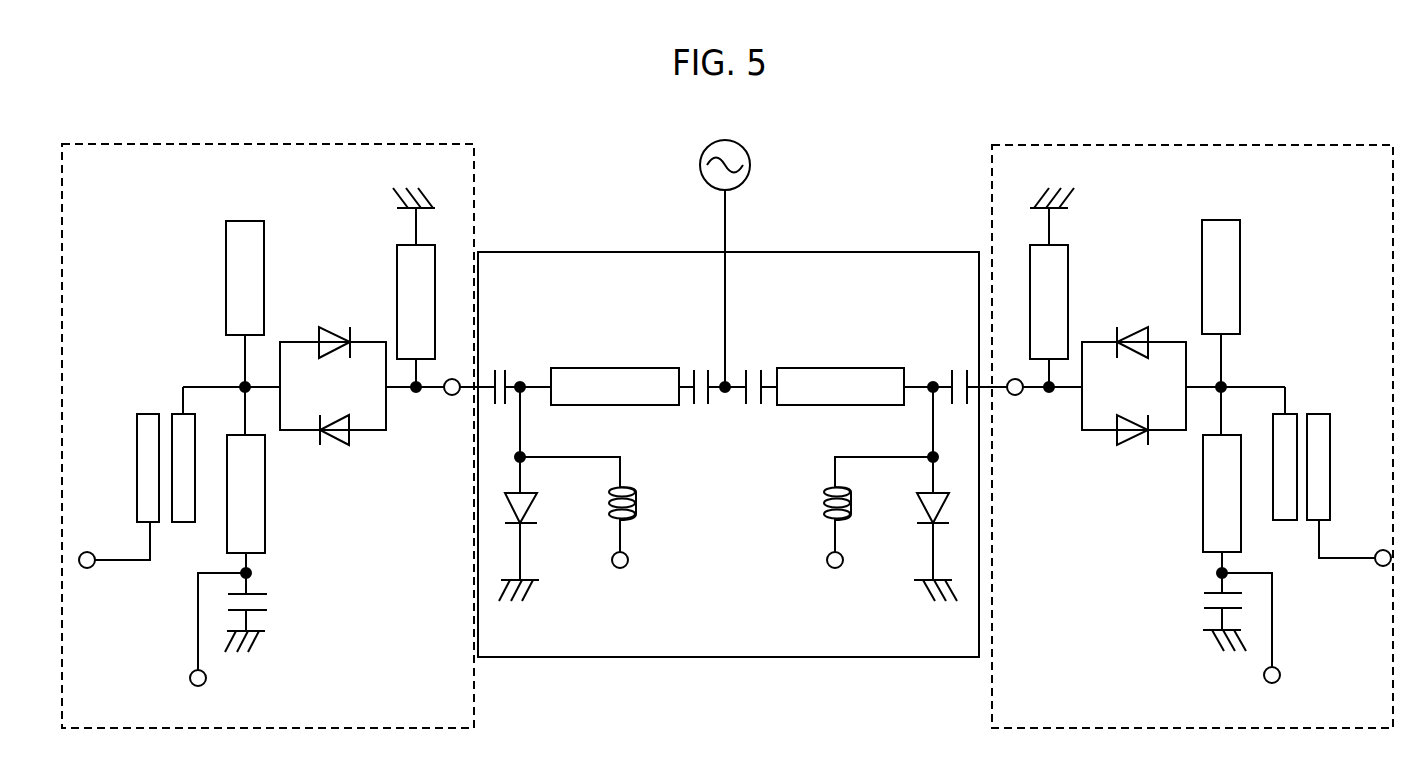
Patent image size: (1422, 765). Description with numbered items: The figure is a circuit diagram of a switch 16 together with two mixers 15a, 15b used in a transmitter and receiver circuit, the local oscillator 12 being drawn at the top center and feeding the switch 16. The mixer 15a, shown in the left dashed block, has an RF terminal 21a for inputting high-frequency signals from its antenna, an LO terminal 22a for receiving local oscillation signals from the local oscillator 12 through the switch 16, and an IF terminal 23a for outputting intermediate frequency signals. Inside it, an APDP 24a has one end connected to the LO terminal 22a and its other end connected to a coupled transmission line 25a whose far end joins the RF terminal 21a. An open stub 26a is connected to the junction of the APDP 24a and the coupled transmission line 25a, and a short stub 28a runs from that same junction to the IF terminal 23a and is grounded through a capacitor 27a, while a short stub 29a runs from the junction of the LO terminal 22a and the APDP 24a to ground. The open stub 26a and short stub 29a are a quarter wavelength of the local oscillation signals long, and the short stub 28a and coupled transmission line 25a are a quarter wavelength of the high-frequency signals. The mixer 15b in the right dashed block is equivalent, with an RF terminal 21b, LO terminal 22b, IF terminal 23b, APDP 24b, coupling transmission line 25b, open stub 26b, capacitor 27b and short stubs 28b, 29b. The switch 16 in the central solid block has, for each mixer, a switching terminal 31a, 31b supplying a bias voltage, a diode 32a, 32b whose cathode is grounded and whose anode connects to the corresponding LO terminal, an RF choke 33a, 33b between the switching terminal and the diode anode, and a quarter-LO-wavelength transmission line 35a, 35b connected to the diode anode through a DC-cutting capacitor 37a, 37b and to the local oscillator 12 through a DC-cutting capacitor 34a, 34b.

The local oscillator 12 is at (700, 170).
The mixer 15a is at (478, 693).
The mixer 15b is at (978, 702).
The switch 16 is at (903, 251).
The RF terminal 21a is at (87, 552).
The RF terminal 21b is at (1383, 550).
The LO terminal 22a is at (452, 395).
The LO terminal 22b is at (1015, 395).
The IF terminal 23a is at (190, 678).
The IF terminal 23b is at (1280, 675).
The APDP 24a is at (346, 458).
The APDP 24b is at (1124, 466).
The coupled transmission line 25a is at (144, 392).
The coupling transmission line 25b is at (1324, 392).
The open stub 26a is at (247, 221).
The open stub 26b is at (1218, 220).
The capacitor 27a is at (270, 602).
The capacitor 27b is at (1200, 600).
The short stub 28a is at (227, 543).
The short stub 28b is at (1241, 542).
The short stub 29a is at (397, 295).
The short stub 29b is at (1068, 293).
The switching terminal 31a is at (628, 563).
The switching terminal 31b is at (827, 565).
The diode 32a is at (533, 507).
The diode 32b is at (918, 505).
The RF choke 33a is at (638, 502).
The RF choke 33b is at (813, 510).
The capacitor 34a is at (703, 363).
The capacitor 34b is at (752, 363).
The transmission line 35a is at (637, 368).
The transmission line 35b is at (875, 368).
The capacitor 37a is at (502, 368).
The capacitor 37b is at (962, 368).